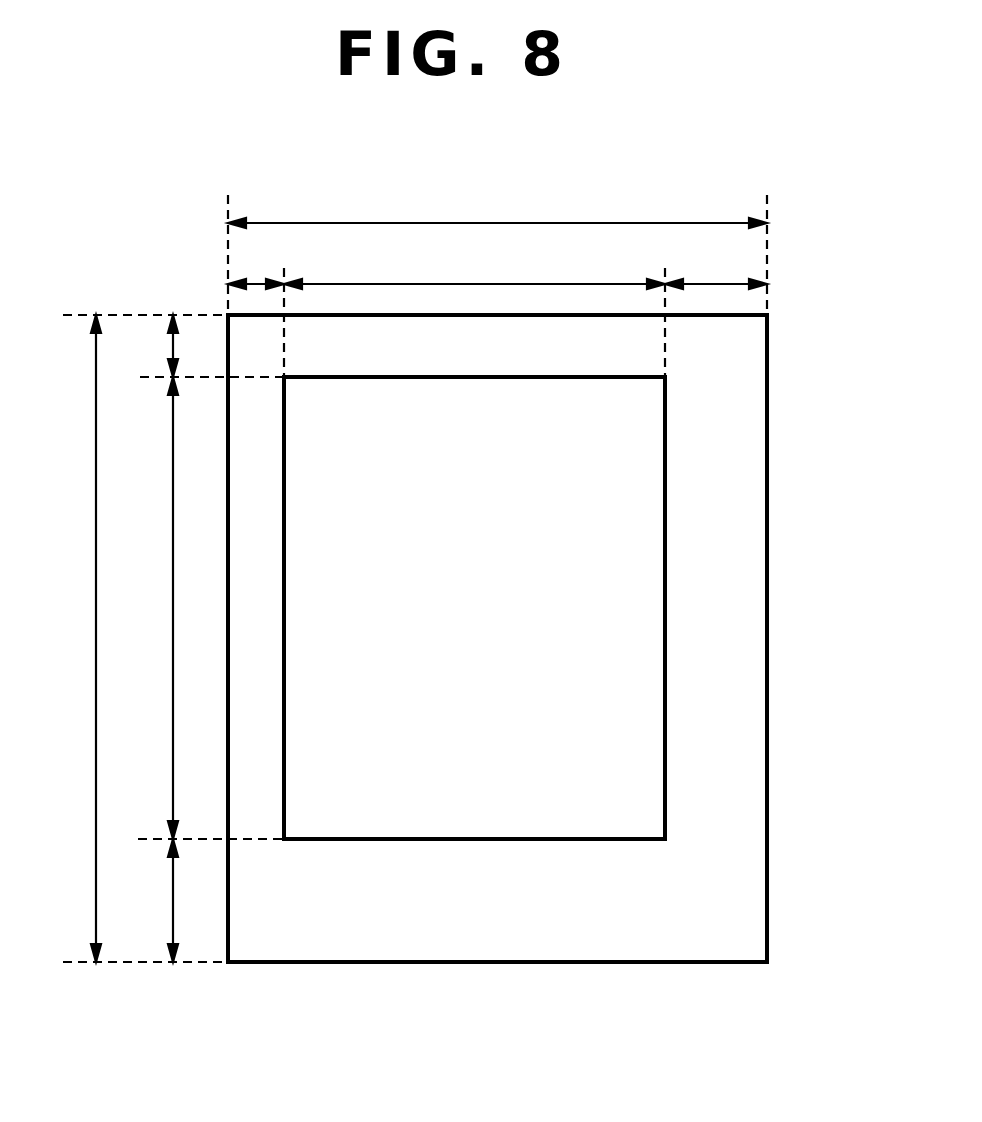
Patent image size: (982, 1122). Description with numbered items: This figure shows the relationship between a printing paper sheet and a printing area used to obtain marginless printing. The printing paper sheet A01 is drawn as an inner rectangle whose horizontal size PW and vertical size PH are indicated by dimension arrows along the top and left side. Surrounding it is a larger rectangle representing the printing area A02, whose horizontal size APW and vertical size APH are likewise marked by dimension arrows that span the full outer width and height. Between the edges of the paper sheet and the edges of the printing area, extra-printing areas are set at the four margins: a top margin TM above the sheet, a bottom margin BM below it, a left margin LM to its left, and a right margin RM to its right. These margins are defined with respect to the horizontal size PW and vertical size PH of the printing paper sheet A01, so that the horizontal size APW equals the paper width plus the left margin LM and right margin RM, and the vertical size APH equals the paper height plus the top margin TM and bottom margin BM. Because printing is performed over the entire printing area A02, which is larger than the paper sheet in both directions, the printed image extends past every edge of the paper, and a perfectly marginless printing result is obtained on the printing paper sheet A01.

The printing paper sheet A01 is at (643, 450).
The printing area A02 is at (755, 608).
The horizontal size of printing area APW is at (497, 207).
The vertical size of printing area APH is at (66, 638).
The horizontal size of printing paper sheet PW is at (474, 266).
The vertical size of printing paper sheet PH is at (151, 608).
The left margin extra-printing area LM is at (256, 267).
The right margin extra-printing area RM is at (716, 267).
The top margin extra-printing area TM is at (150, 346).
The bottom margin extra-printing area BM is at (150, 900).